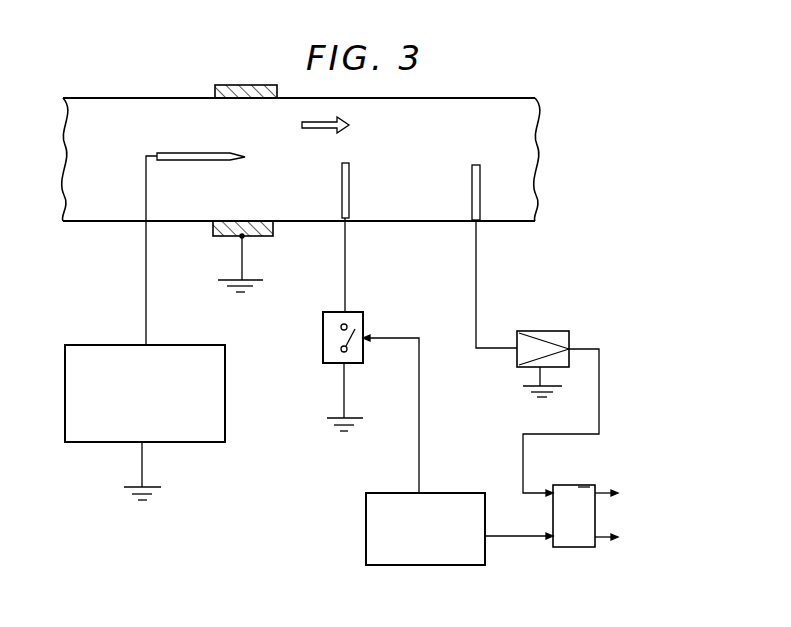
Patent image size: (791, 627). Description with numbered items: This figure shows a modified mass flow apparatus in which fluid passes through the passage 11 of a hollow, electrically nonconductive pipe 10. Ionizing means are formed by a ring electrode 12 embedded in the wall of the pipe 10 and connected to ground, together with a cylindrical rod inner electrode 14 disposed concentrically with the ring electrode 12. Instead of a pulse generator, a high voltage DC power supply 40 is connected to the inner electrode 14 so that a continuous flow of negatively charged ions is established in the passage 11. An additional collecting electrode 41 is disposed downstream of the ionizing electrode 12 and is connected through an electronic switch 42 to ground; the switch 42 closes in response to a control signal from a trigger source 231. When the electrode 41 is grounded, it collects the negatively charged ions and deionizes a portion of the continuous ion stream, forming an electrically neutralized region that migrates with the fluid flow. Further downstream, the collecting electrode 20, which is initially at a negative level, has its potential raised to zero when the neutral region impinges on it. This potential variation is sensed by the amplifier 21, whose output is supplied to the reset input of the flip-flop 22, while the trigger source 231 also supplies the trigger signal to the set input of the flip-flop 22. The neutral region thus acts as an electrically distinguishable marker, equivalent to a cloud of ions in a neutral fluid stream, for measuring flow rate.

The pipe 10 is at (158, 75).
The passage 11 is at (420, 141).
The ring electrode 12 is at (234, 85).
The inner electrode 14 is at (182, 153).
The ion collecting electrode 20 is at (480, 180).
The sense amplifier 21 is at (551, 335).
The flip-flop 22 is at (570, 546).
The trigger source 231 is at (447, 500).
The high voltage DC power supply 40 is at (183, 352).
The additional collecting electrode 41 is at (349, 192).
The electronic switch 42 is at (357, 308).